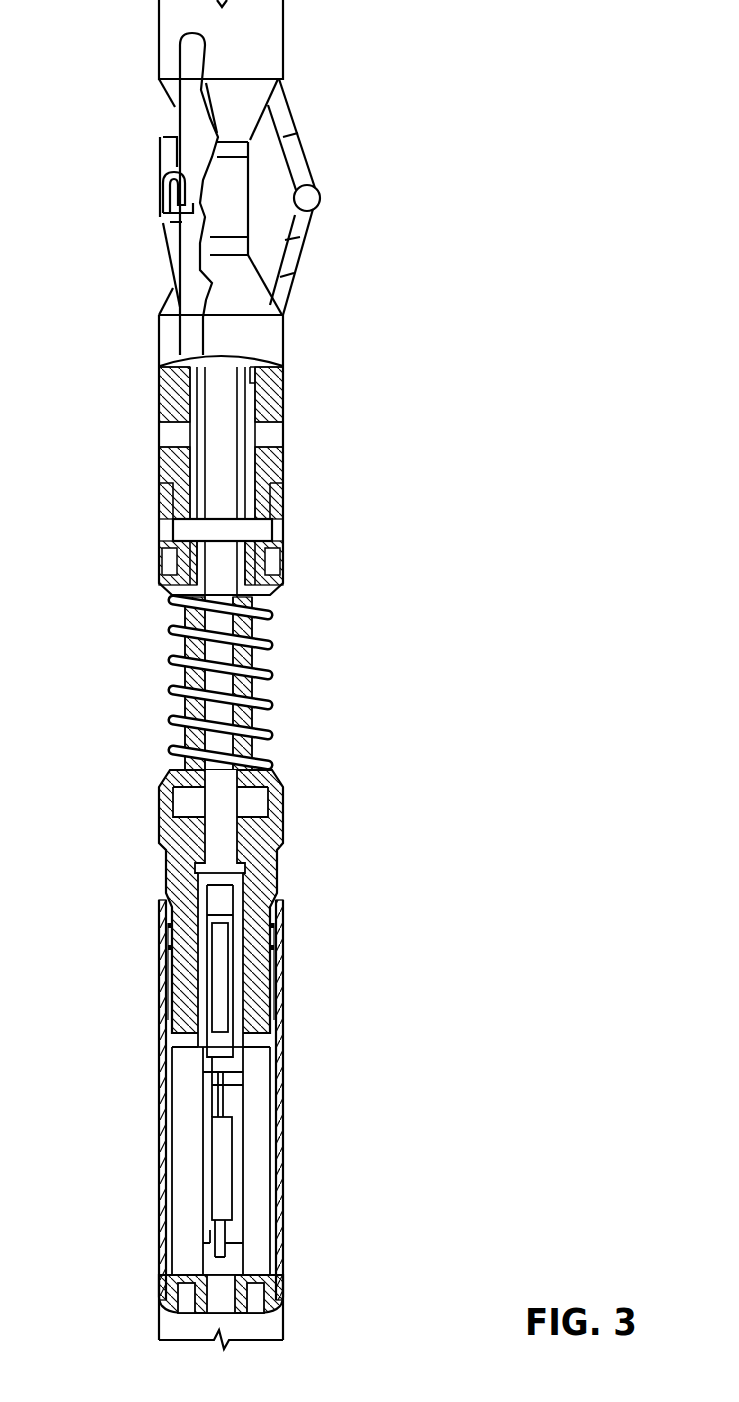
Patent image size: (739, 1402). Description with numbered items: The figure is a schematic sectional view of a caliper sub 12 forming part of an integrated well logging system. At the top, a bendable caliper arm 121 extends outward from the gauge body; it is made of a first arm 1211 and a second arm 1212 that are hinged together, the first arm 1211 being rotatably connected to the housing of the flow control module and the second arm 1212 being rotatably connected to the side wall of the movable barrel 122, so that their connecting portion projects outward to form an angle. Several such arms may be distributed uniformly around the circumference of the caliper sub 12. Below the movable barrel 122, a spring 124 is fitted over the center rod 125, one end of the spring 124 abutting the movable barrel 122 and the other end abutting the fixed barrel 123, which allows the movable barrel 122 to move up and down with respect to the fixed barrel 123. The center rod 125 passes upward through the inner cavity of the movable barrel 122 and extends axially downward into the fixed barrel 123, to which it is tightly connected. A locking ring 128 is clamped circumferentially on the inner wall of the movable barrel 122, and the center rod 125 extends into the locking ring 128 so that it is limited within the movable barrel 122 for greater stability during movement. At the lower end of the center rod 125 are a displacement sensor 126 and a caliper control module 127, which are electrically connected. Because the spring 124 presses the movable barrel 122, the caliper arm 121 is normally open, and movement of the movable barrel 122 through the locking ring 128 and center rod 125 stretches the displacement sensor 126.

The caliper sub 12 is at (462, 159).
The bendable caliper arm 121 is at (283, 117).
The first arm 1211 is at (178, 128).
The second arm 1212 is at (178, 252).
The movable barrel 122 is at (245, 302).
The fixed barrel 123 is at (158, 953).
The spring 124 is at (270, 672).
The center rod 125 is at (225, 803).
The displacement sensor 126 is at (222, 1160).
The caliper control module 127 is at (240, 1212).
The locking ring 128 is at (254, 533).